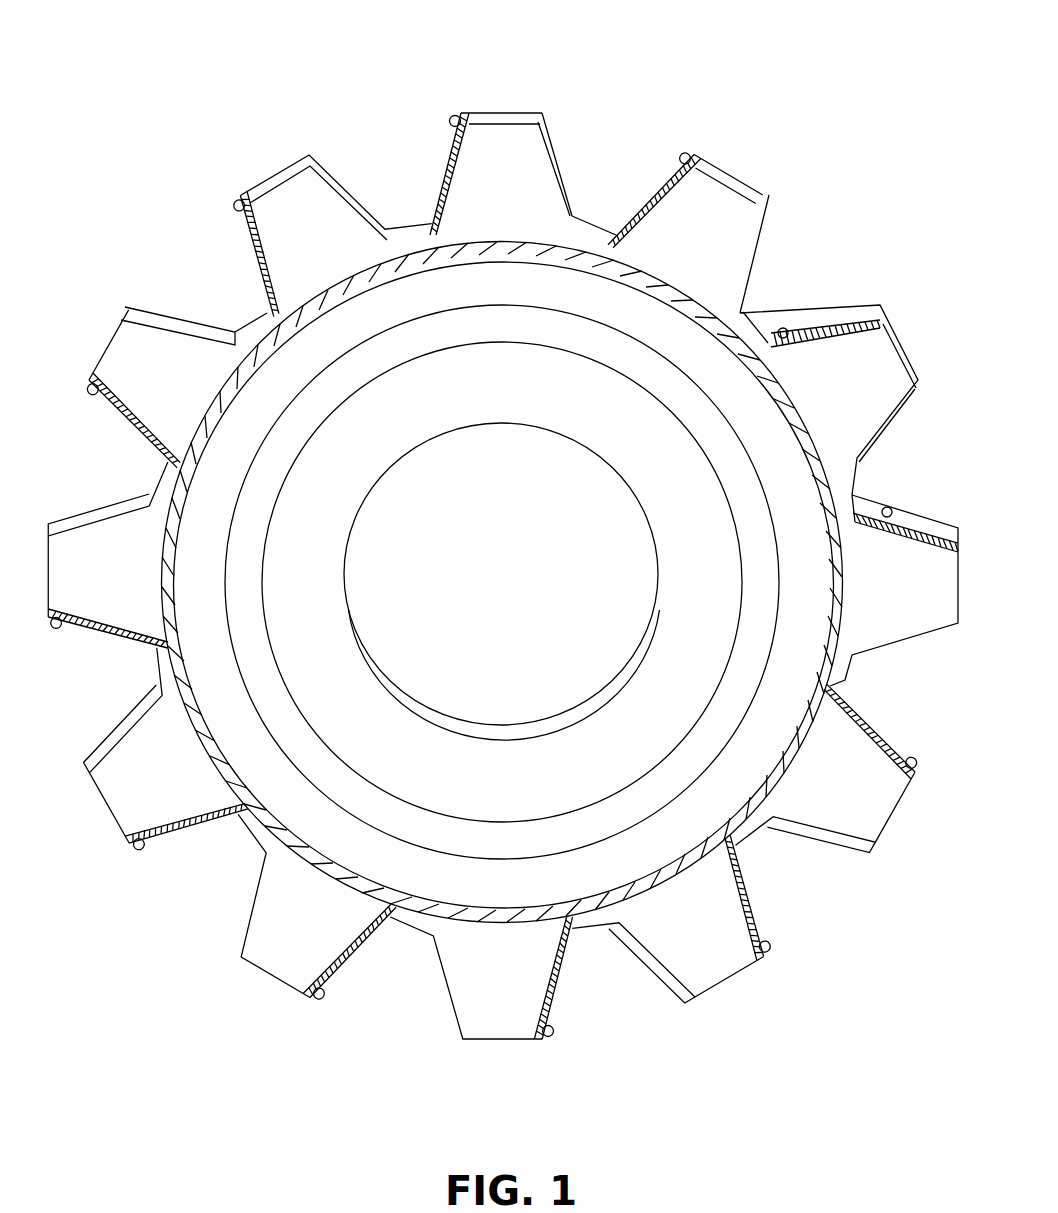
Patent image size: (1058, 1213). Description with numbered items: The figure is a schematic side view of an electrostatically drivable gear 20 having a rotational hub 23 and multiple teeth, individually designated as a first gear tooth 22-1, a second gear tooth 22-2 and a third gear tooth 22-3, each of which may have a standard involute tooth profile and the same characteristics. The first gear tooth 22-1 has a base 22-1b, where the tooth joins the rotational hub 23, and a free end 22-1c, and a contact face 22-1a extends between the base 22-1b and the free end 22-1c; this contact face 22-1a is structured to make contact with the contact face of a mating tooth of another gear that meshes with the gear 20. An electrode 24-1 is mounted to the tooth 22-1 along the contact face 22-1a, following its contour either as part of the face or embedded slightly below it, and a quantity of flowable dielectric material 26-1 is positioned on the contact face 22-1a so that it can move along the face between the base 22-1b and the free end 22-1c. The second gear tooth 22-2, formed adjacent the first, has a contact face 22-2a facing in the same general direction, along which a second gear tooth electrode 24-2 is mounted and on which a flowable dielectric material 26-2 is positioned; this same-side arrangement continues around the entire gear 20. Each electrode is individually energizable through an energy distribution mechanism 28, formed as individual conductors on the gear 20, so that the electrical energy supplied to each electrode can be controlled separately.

The electrostatically drivable gear 20 is at (503, 525).
The first gear tooth 22-1 is at (506, 123).
The contact face of first gear tooth 22-1a is at (443, 170).
The base of first gear tooth 22-1b is at (523, 218).
The free end of first gear tooth 22-1c is at (497, 110).
The second gear tooth 22-2 is at (258, 213).
The contact face of second gear tooth 22-2a is at (250, 262).
The third gear tooth 22-3 is at (133, 367).
The rotational hub 23 is at (757, 315).
The electrode of first gear tooth 24-1 is at (440, 190).
The second gear tooth electrode 24-2 is at (258, 280).
The flowable dielectric material on first tooth 26-1 is at (450, 136).
The flowable dielectric material on second tooth 26-2 is at (236, 222).
The energy distribution mechanism 28 is at (703, 367).